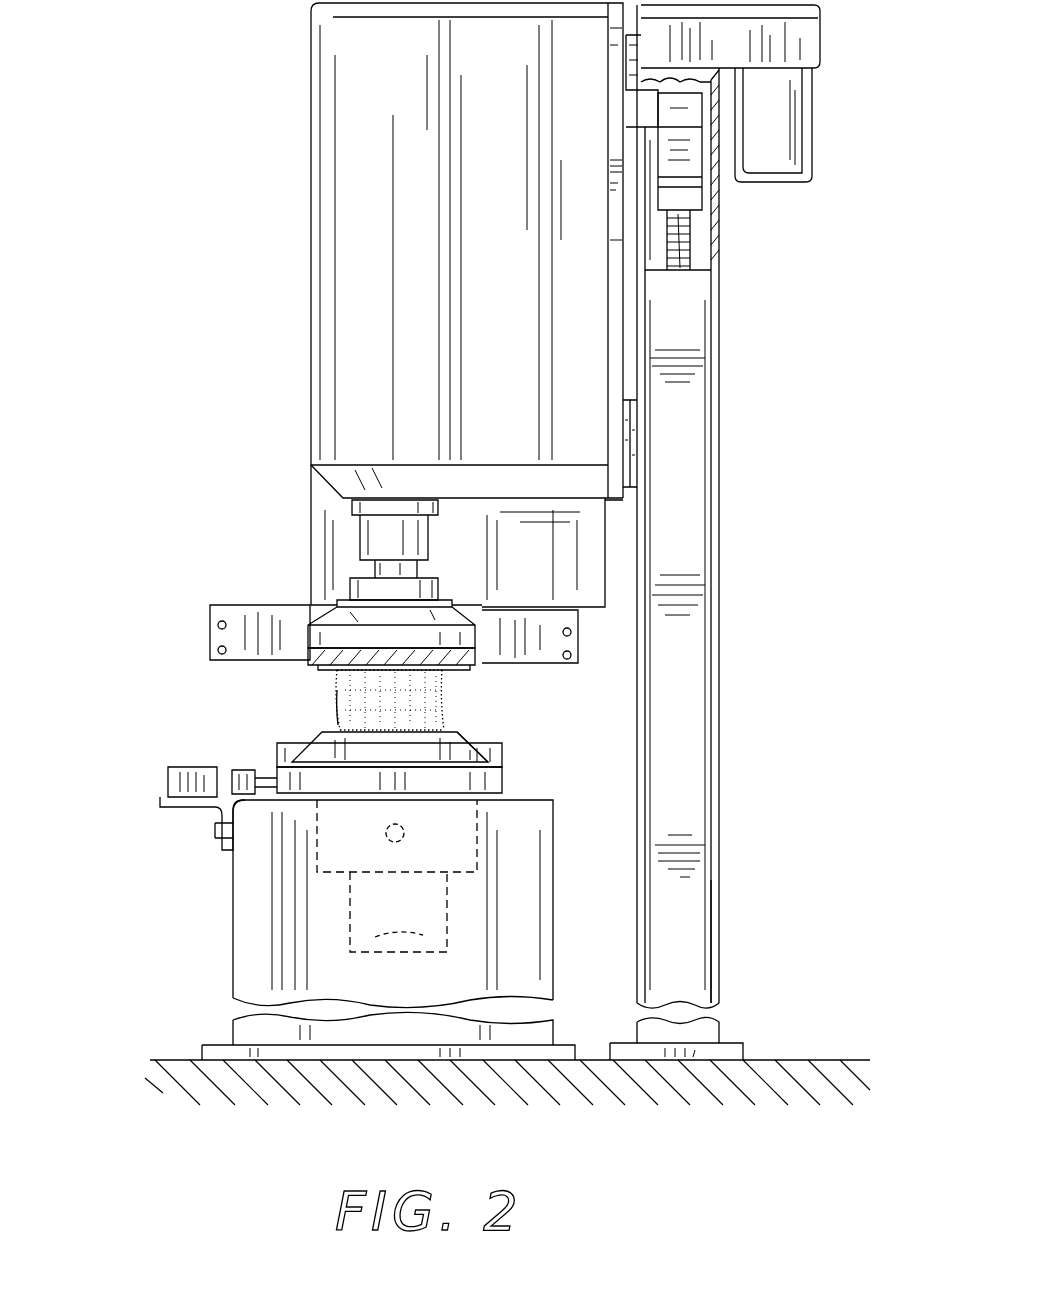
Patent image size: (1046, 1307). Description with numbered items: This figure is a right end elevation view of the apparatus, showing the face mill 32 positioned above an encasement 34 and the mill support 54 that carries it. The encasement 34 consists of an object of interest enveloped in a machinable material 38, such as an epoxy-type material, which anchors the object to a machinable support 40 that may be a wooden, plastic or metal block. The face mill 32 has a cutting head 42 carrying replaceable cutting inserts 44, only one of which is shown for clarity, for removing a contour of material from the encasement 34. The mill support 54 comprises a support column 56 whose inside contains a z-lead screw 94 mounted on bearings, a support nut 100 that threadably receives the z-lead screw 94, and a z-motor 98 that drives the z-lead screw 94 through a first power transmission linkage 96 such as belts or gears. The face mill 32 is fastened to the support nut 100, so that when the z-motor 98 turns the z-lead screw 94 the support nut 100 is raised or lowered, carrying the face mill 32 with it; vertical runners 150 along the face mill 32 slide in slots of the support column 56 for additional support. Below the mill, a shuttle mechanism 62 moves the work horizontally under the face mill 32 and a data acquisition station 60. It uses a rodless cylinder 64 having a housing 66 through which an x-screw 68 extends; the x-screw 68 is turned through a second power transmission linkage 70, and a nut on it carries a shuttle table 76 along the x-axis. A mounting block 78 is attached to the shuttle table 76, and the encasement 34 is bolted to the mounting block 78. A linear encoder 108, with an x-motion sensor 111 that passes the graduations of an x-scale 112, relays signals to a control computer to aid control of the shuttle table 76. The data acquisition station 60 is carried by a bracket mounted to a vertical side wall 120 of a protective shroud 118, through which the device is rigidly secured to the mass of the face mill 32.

The face mill 32 is at (307, 191).
The encasement 34 is at (338, 708).
The machinable material 38 is at (350, 690).
The machinable support 40 is at (460, 743).
The cutting head 42 is at (335, 610).
The replaceable cutting inserts 44 is at (322, 674).
The mill support 54 is at (720, 810).
The support column 56 is at (720, 905).
The data acquisition station 60 is at (307, 495).
The shuttle mechanism 62 is at (511, 738).
The rodless cylinder 64 is at (318, 846).
The housing 66 is at (322, 977).
The x-screw 68 is at (405, 833).
The second power transmission linkage 70 is at (398, 912).
The shuttle table 76 is at (502, 783).
The mounting block 78 is at (502, 760).
The z-lead screw 94 is at (693, 247).
The first power transmission linkage 96 is at (817, 33).
The z-motor 98 is at (813, 135).
The support nut 100 is at (693, 192).
The linear encoder 108 is at (167, 773).
The x-motion sensor 111 is at (168, 790).
The x-scale 112 is at (228, 778).
The protective shroud 118 is at (337, 541).
The vertical side wall 120 is at (555, 563).
The vertical runners 150 is at (632, 445).